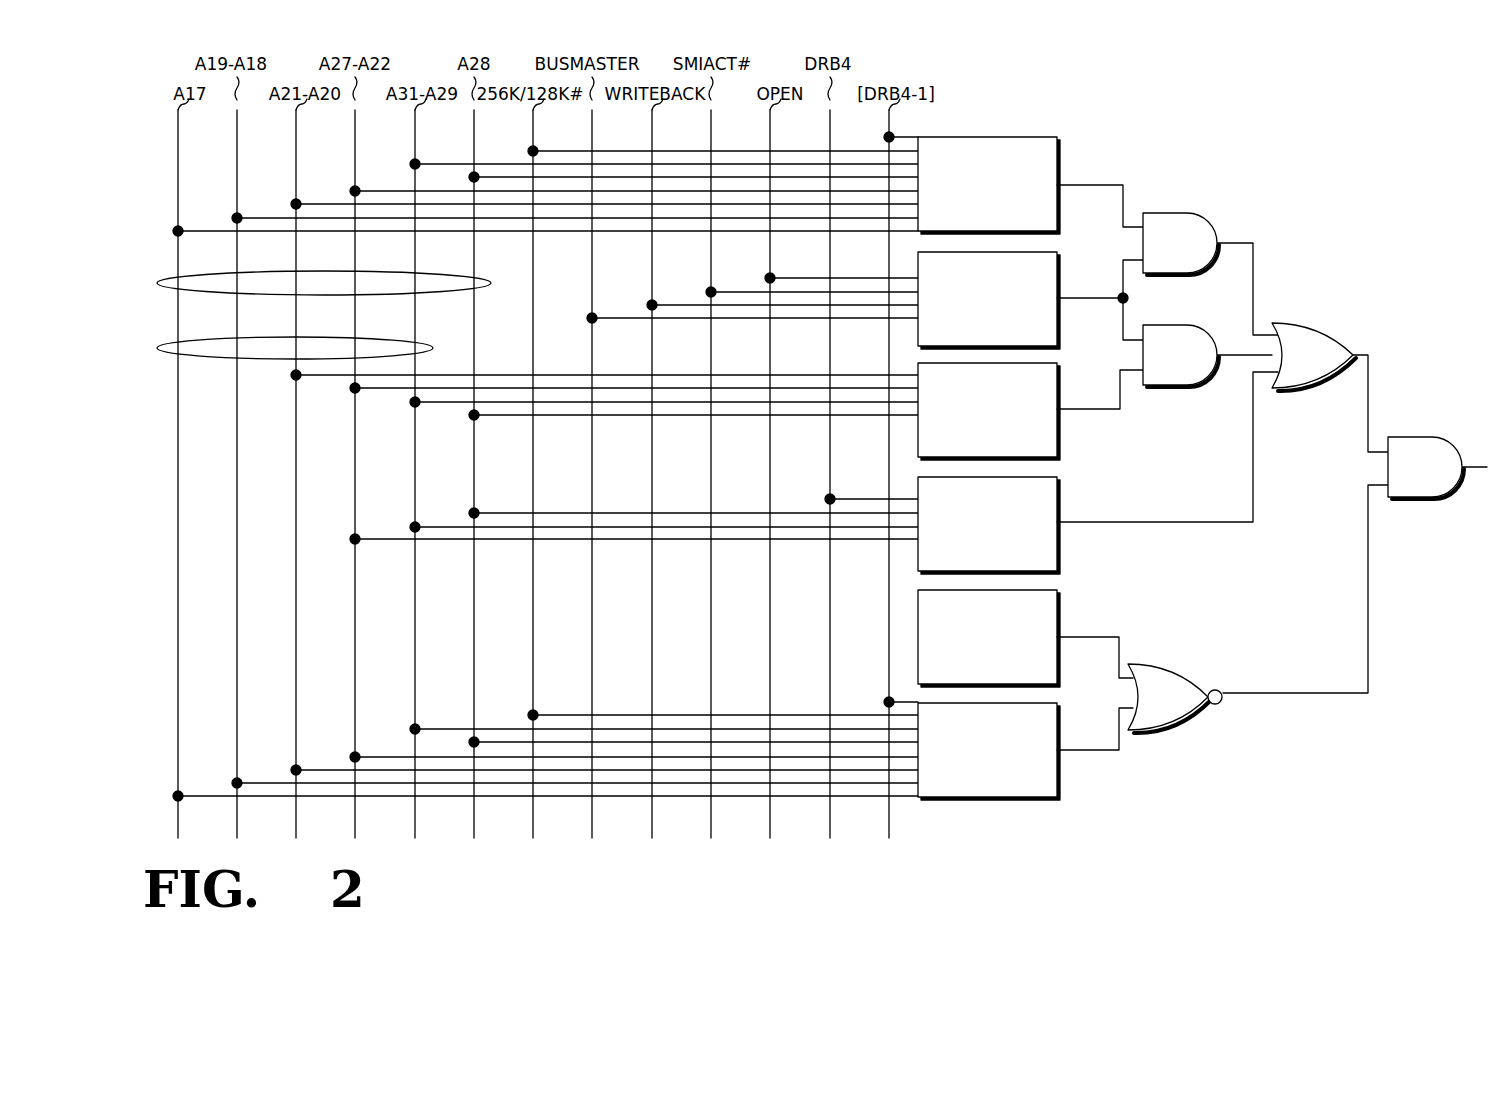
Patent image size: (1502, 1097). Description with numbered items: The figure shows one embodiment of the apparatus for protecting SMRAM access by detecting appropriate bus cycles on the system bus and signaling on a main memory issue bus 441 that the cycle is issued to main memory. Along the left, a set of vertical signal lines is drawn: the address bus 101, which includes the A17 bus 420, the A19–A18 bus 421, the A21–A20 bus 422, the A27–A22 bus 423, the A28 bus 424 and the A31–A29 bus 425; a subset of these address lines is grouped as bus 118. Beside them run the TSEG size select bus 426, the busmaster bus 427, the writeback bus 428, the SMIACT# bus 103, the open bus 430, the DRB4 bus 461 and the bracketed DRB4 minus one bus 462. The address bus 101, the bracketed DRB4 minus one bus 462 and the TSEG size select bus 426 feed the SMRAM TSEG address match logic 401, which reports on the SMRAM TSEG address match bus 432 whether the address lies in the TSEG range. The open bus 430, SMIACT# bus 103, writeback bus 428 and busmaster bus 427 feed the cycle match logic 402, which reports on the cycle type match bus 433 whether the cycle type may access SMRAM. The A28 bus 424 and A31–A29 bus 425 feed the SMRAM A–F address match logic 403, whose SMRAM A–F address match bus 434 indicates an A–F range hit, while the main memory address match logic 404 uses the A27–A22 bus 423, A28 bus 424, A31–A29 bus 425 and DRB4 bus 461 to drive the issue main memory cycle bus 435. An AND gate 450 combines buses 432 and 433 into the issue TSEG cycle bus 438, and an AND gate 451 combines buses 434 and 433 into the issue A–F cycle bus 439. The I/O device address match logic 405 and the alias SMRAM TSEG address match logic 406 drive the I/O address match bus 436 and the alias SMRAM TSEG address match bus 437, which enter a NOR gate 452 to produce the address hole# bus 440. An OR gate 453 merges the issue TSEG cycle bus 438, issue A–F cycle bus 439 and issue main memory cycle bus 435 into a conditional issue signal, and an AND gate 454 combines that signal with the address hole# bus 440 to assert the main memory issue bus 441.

The address bus 101 is at (348, 271).
The address bus subset 118 is at (279, 335).
The SMIACT# bus 103 is at (711, 667).
The SMRAM Top Segment (TSEG) address match logic 401 is at (1019, 225).
The cycle match logic 402 is at (1019, 341).
The SMRAM A-F address match logic 403 is at (1019, 451).
The main memory address match logic 404 is at (1019, 565).
The I/O device address match logic 405 is at (1019, 678).
The alias SMRAM TSEG address match logic 406 is at (1019, 791).
The address bit 17 (A17) bus 420 is at (180, 588).
The address bit 19 and address bit 18 (A19-A18) bus 421 is at (236, 668).
The address bit 21 and address bit 20 (A21-A20) bus 422 is at (296, 634).
The address bit 27 through address bit 22 (A27-A22) bus 423 is at (355, 667).
The address bit 28 (A28) bus 424 is at (474, 667).
The address bit 31 through address bit 29 (A31-A29) bus 425 is at (415, 634).
The 256K/128K# bus 426 is at (533, 634).
The busmaster bus 427 is at (592, 667).
The writeback bus 428 is at (652, 634).
The open bus 430 is at (770, 634).
The DRB4 bus 461 is at (830, 667).
The [DRB4-1] bus 462 is at (890, 634).
The SMRAM TSEG address match bus 432 is at (1087, 185).
The cycle type match bus 433 is at (1087, 298).
The SMRAM A-F address match bus 434 is at (1083, 408).
The issue main memory cycle bus 435 is at (1083, 521).
The I/O address match bus 436 is at (1084, 636).
The alias SMRAM TSEG address match bus 437 is at (1084, 749).
The issue TSEG cycle bus 438 is at (1254, 284).
The issue A-F cycle bus 439 is at (1247, 355).
The address hole# bus 440 is at (1282, 693).
The main memory issue bus 441 is at (1485, 465).
The AND gate 450 is at (1155, 252).
The AND gate 451 is at (1155, 364).
The NOR gate 452 is at (1152, 706).
The OR gate 453 is at (1295, 364).
The AND gate 454 is at (1400, 476).